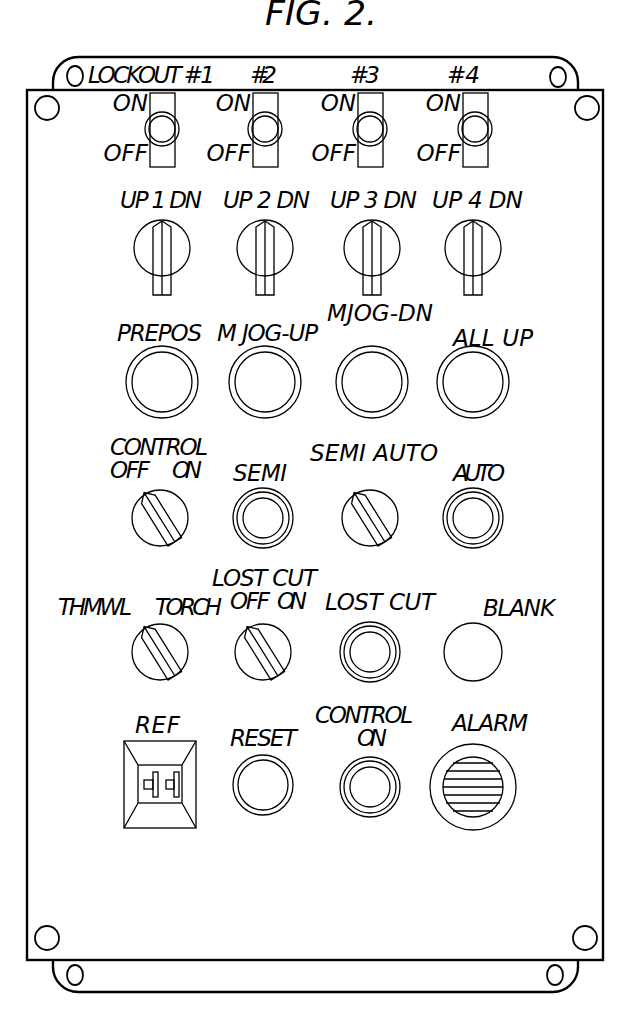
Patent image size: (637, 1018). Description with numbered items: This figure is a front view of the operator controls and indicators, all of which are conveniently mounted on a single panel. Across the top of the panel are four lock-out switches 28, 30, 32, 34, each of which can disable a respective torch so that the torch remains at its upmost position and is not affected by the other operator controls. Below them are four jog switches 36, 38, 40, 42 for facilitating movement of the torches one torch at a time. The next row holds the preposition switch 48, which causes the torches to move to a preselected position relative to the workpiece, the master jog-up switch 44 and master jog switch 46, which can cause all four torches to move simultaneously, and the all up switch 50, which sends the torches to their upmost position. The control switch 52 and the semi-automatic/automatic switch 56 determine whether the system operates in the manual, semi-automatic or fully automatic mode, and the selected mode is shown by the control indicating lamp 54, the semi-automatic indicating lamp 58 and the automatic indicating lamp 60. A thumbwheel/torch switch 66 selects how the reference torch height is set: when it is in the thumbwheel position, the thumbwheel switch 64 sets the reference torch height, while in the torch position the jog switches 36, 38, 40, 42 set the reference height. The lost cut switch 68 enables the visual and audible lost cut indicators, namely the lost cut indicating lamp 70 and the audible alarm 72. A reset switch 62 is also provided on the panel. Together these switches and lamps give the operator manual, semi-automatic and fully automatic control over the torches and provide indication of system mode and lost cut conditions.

The lock-out switch 28 is at (145, 129).
The lock-out switch 30 is at (248, 129).
The lock-out switch 32 is at (353, 129).
The lock-out switch 34 is at (458, 129).
The jog switch 36 is at (135, 253).
The jog switch 38 is at (242, 266).
The jog switch 40 is at (348, 266).
The jog switch 42 is at (447, 266).
The master jog-up switch 44 is at (232, 398).
The master jog switch 46 is at (337, 398).
The preposition switch 48 is at (127, 398).
The all up switch 50 is at (442, 400).
The control switch 52 is at (137, 535).
The control indicator 54 is at (352, 813).
The semi-automatic/automatic switch 56 is at (344, 535).
The semi-automatic indicator 58 is at (235, 536).
The automatic indicator 60 is at (447, 536).
The reset switch 62 is at (249, 811).
The thumbwheel switch 64 is at (124, 815).
The thumbwheel/torch switch 66 is at (138, 670).
The lost cut switch 68 is at (240, 670).
The lost cut indicating lamp 70 is at (345, 670).
The audible alarm 72 is at (442, 816).